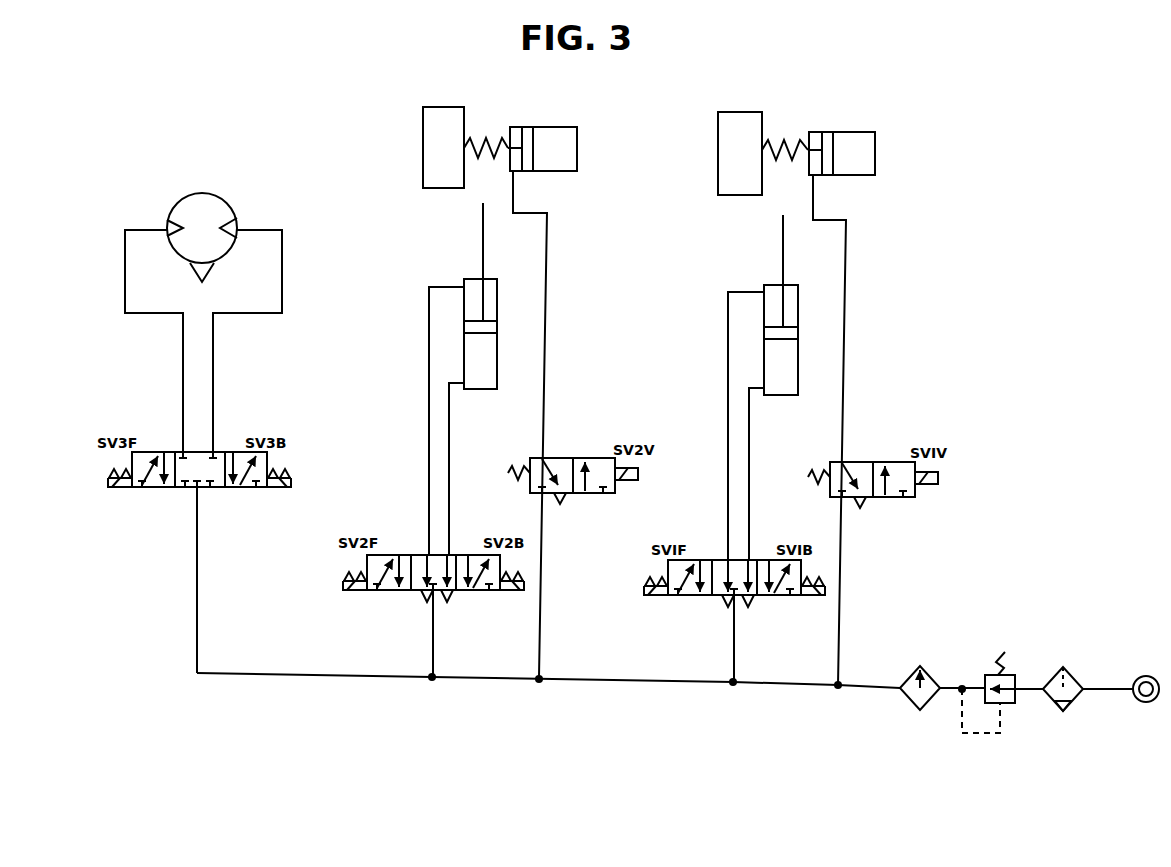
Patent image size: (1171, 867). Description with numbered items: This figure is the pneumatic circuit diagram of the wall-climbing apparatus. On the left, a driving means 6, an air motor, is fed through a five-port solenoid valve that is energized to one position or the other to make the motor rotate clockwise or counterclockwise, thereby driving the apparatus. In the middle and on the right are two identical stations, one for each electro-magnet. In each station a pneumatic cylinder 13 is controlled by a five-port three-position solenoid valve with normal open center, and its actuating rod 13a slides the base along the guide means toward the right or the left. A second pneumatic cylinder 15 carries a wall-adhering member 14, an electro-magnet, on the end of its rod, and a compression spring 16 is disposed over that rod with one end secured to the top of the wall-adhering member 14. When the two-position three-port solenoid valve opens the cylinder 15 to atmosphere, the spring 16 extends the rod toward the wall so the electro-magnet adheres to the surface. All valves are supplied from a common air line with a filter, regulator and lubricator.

The driving means 6 is at (234, 207).
The pneumatic cylinder 13 is at (490, 392).
The actuating rod 13a is at (485, 262).
The wall-adhering member 14 is at (435, 118).
The pneumatic cylinder 15 is at (557, 133).
The compression spring 16 is at (482, 158).